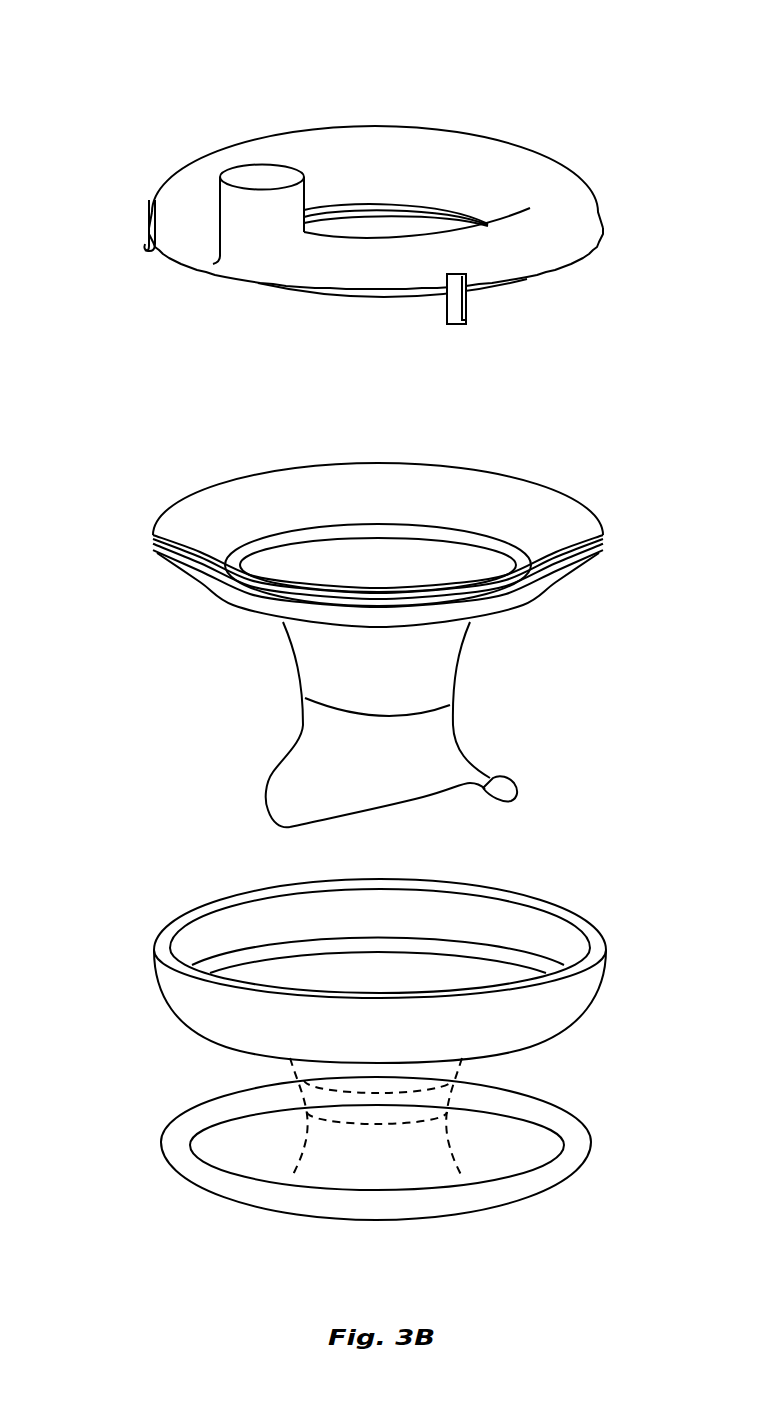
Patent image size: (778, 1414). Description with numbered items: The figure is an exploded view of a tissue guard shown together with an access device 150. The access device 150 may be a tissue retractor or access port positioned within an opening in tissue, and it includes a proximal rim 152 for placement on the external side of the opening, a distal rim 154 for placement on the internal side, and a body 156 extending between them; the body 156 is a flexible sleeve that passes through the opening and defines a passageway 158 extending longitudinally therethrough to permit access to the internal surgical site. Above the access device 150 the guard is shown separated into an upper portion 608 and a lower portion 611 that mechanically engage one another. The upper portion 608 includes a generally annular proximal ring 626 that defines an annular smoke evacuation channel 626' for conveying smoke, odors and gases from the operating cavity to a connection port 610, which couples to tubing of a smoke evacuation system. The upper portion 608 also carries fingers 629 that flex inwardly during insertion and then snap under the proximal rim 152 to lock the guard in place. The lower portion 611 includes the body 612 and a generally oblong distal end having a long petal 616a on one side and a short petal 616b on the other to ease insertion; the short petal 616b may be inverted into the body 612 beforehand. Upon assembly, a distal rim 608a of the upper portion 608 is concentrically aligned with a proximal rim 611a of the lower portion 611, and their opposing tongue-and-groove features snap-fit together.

The upper portion 608 is at (370, 118).
The distal rim 608a is at (526, 279).
The connection port 610 is at (274, 210).
The proximal ring 626 is at (417, 145).
The annular smoke evacuation channel 626' is at (477, 183).
The fingers 629 is at (146, 243).
The lower portion 611 is at (138, 540).
The proximal rim 611a is at (553, 484).
The body 612 is at (440, 665).
The long petal 616a is at (497, 777).
The short petal 616b is at (282, 826).
The access device 150 is at (218, 1078).
The proximal rim 152 is at (543, 933).
The distal rim 154 is at (465, 1214).
The body 156 is at (437, 1127).
The passageway 158 is at (441, 964).